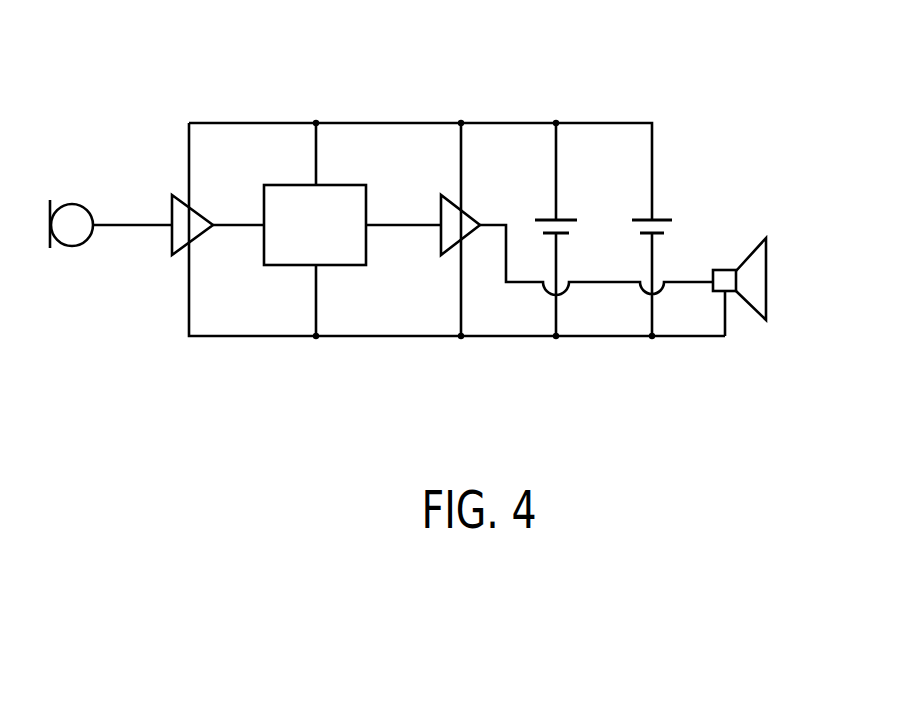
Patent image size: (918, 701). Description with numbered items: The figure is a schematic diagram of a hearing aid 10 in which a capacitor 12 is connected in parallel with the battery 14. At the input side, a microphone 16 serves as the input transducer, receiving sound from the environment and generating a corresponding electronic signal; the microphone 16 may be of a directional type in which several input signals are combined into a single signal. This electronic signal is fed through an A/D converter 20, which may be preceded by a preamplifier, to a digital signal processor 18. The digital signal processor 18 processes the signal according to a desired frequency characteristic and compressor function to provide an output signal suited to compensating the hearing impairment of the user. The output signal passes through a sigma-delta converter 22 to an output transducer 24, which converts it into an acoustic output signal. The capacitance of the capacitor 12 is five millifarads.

The hearing aid 10 is at (413, 87).
The capacitor 12 is at (562, 220).
The battery 14 is at (658, 220).
The microphone 16 is at (72, 203).
The digital signal processor 18 is at (197, 210).
The A/D converter 20 is at (343, 185).
The sigma-delta converter 22 is at (462, 215).
The output transducer 24 is at (766, 263).